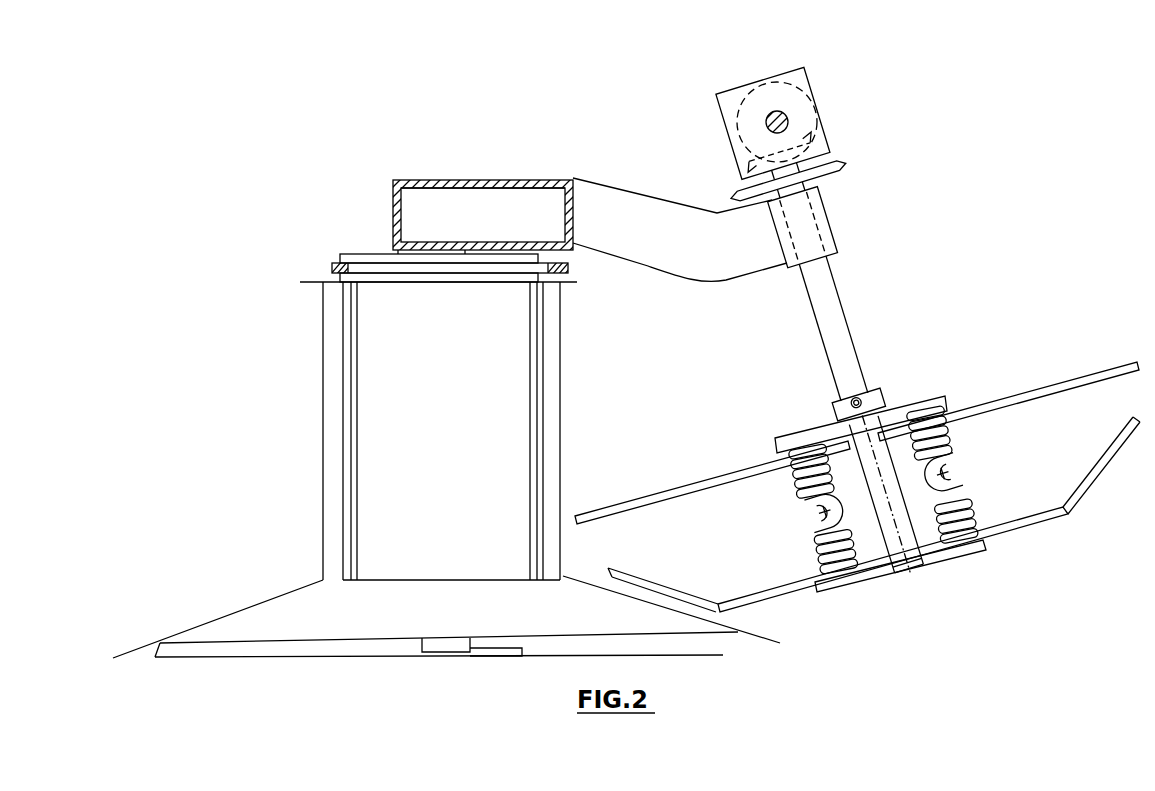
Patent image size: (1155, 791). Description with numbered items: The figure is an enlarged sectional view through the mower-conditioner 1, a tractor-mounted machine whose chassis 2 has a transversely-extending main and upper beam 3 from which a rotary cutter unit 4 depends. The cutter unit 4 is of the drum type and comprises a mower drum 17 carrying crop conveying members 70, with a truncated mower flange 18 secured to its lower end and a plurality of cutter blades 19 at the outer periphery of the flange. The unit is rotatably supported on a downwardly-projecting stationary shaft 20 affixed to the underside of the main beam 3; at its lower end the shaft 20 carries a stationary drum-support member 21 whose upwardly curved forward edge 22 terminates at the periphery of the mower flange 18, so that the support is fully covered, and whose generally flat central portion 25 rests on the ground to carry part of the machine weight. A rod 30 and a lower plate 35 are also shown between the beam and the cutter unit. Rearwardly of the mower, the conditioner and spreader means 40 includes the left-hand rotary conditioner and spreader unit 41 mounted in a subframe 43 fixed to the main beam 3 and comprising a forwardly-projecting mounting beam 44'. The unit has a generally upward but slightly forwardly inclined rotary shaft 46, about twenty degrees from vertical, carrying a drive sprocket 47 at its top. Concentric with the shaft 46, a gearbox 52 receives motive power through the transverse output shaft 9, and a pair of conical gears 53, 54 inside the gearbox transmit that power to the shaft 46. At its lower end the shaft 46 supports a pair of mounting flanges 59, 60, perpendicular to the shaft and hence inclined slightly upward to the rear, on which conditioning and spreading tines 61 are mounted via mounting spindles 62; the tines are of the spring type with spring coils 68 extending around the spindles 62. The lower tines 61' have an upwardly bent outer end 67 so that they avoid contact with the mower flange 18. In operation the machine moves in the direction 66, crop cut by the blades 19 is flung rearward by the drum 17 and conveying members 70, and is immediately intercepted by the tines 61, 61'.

The mower-conditioner 1 is at (346, 151).
The chassis 2 is at (392, 215).
The main and upper beam 3 is at (442, 180).
The rotary type cutter unit 4 is at (323, 467).
The transverse output shaft 9 is at (762, 127).
The mower drum 17 is at (323, 362).
The truncated mower flange 18 is at (216, 610).
The cutter blade 19 is at (137, 655).
The stationary shaft 20 is at (362, 252).
The stationary drum-support member 21 is at (376, 657).
The upwardly curved forward edge 22 is at (158, 658).
The flat central portion 25 is at (421, 656).
The rod 30 is at (572, 268).
The lower mounting plate 35 is at (332, 268).
The conditioner and spreader means 40 is at (985, 255).
The rotary conditioner and spreader unit 41 is at (863, 362).
The subframe 43 is at (767, 278).
The forwardly-projecting mounting beam 44' is at (680, 249).
The rotary shaft 46 is at (851, 318).
The drive sprocket 47 is at (838, 172).
The gearbox 52 is at (778, 72).
The conical gear 53 is at (818, 97).
The conical gear 54 is at (820, 139).
The mounting flange 59 is at (945, 397).
The mounting flange 60 is at (930, 560).
The conditioning and spreading tine 61 is at (857, 446).
The lower tine 61' is at (880, 559).
The mounting spindle 62 is at (805, 510).
The direction of movement 66 is at (217, 427).
The upwardly bent outer end 67 is at (650, 572).
The spring coil 68 is at (807, 547).
The crop conveying member 70 is at (343, 533).